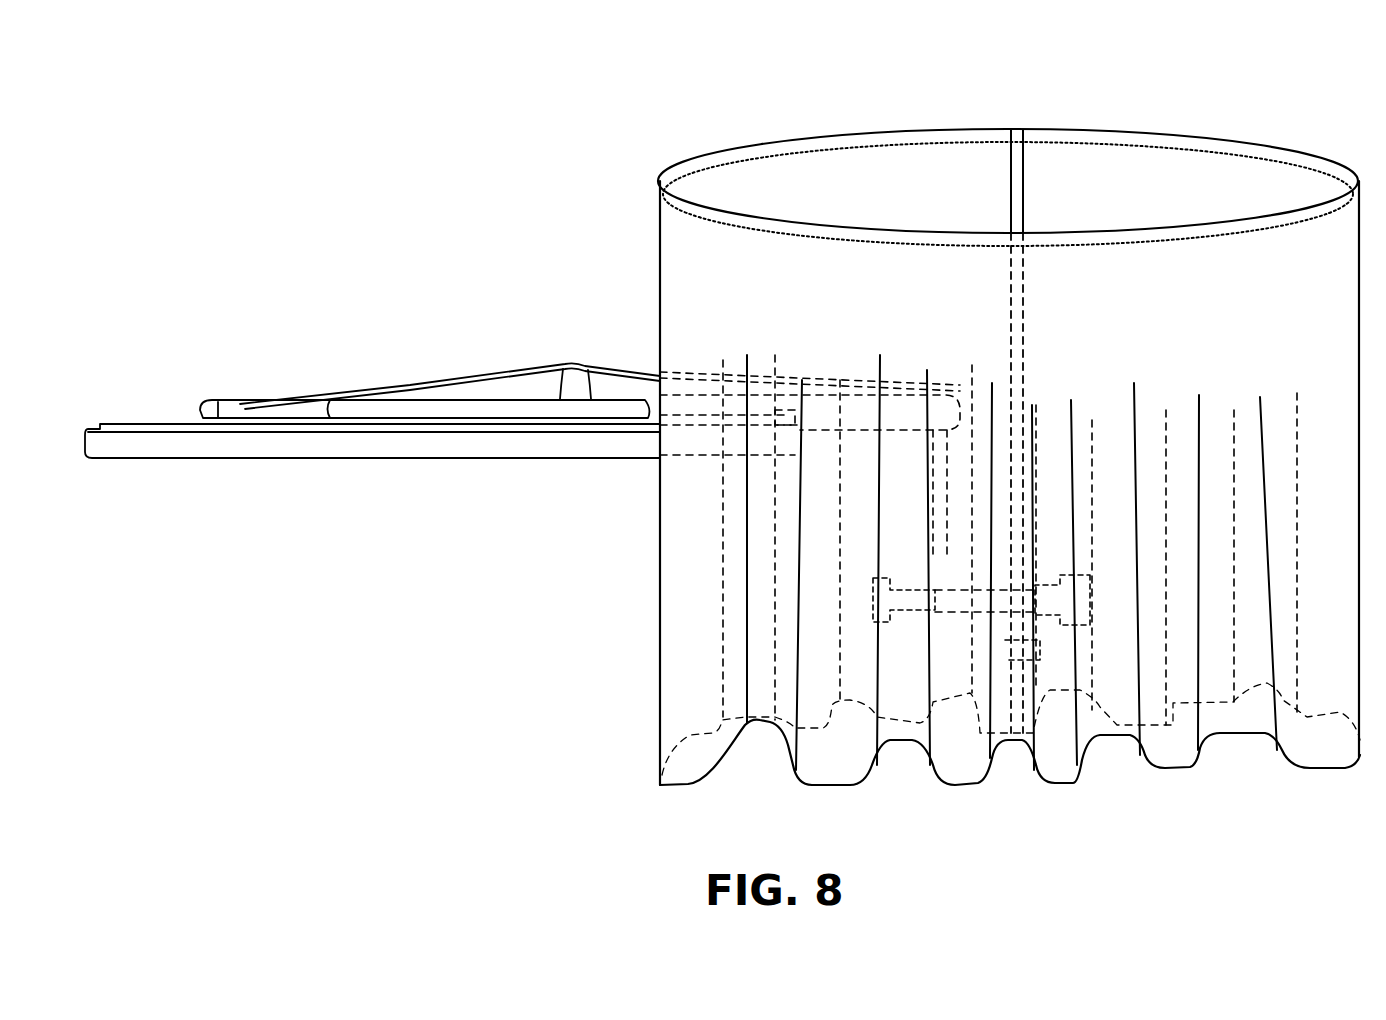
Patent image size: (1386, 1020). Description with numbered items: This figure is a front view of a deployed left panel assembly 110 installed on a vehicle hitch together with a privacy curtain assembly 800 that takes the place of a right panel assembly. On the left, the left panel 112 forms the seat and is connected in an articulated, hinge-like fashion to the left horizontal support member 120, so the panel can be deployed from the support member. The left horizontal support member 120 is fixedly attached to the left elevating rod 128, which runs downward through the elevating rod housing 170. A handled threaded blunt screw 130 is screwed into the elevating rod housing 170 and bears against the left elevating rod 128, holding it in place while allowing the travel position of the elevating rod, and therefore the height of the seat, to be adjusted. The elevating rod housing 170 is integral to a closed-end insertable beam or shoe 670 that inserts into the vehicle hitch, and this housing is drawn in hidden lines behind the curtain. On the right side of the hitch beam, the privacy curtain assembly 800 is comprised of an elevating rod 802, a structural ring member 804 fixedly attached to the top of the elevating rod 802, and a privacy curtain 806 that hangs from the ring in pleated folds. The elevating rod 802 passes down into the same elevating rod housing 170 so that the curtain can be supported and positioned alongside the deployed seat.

The left panel assembly 110 is at (450, 328).
The left panel 112 is at (276, 447).
The left horizontal support member 120 is at (868, 415).
The left elevating rod 128 is at (935, 500).
The handled threaded blunt screw 130 is at (1080, 593).
The elevating rod housing 170 is at (1027, 630).
The closed-end insertable beam or shoe 670 is at (965, 617).
The privacy curtain assembly 800 is at (1265, 108).
The elevating rod 802 is at (1018, 300).
The structural ring member 804 is at (1040, 130).
The privacy curtain 806 is at (659, 662).